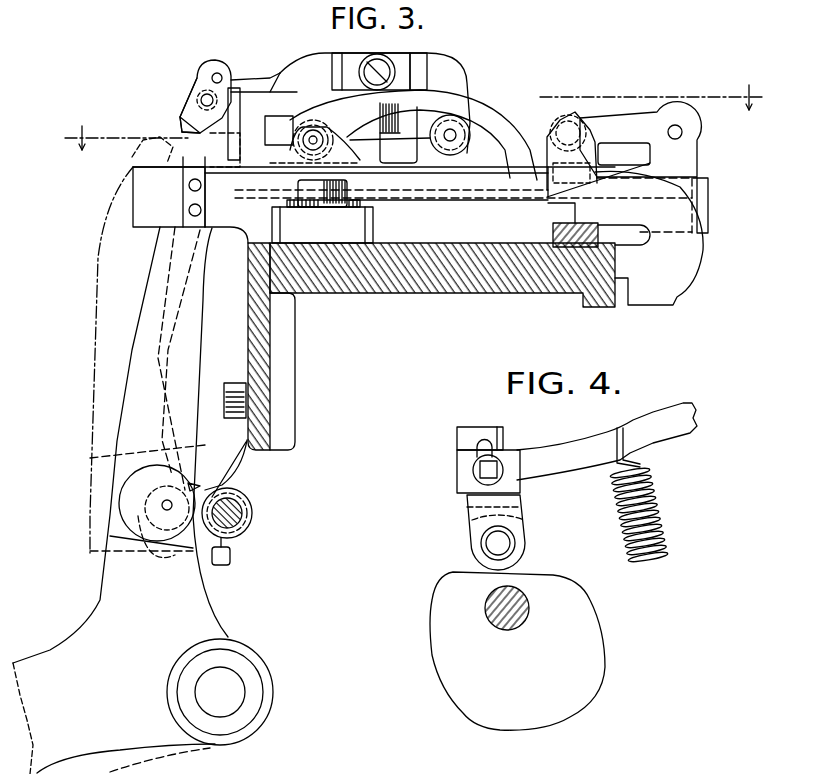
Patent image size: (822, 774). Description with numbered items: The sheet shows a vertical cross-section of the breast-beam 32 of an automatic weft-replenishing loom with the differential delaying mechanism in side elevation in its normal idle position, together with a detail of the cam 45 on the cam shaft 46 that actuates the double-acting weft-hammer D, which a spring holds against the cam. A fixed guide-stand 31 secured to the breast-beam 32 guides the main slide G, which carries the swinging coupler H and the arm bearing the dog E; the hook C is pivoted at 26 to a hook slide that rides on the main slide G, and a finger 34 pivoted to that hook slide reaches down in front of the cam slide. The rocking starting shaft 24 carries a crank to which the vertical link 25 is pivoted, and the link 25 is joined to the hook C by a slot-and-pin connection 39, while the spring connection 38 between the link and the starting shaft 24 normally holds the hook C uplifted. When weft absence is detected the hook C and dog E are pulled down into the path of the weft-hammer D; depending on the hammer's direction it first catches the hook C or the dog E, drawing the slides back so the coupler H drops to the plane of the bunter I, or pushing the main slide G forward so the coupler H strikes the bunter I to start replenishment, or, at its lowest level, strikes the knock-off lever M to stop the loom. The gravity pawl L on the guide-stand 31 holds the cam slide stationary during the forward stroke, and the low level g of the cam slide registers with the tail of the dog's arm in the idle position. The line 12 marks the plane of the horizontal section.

In FIG. 3, the link 25 is at (206, 69).
In FIG. 3, the slot-and-pin connection 39 is at (222, 78).
In FIG. 3, the hook C is at (186, 110).
In FIG. 3, the dog E is at (184, 118).
In FIG. 3, the section line 12— 12 is at (415, 120).
In FIG. 3, the pivot 26 is at (448, 132).
In FIG. 3, the coupler H is at (492, 130).
In FIG. 3, the gravity pawl L is at (550, 118).
In FIG. 3, the finger 34 is at (623, 128).
In FIG. 3, the main slide G is at (700, 188).
In FIG. 3, the bunter I is at (673, 265).
In FIG. 3, the knock-off lever M is at (580, 249).
In FIG. 3, the fixed guide-stand 31 is at (434, 272).
In FIG. 3, the breast-beam 32 is at (401, 272).
In FIG. 3, the low level g is at (362, 188).
In FIG. 3, the double-acting weft-hammer D is at (147, 356).
In FIG. 4, the double-acting weft-hammer D is at (658, 434).
In FIG. 3, the spring connection 38 is at (200, 486).
In FIG. 3, the starting shaft 24 is at (242, 517).
In FIG. 4, the cam shaft 46 is at (486, 616).
In FIG. 4, the cam 45 is at (576, 674).